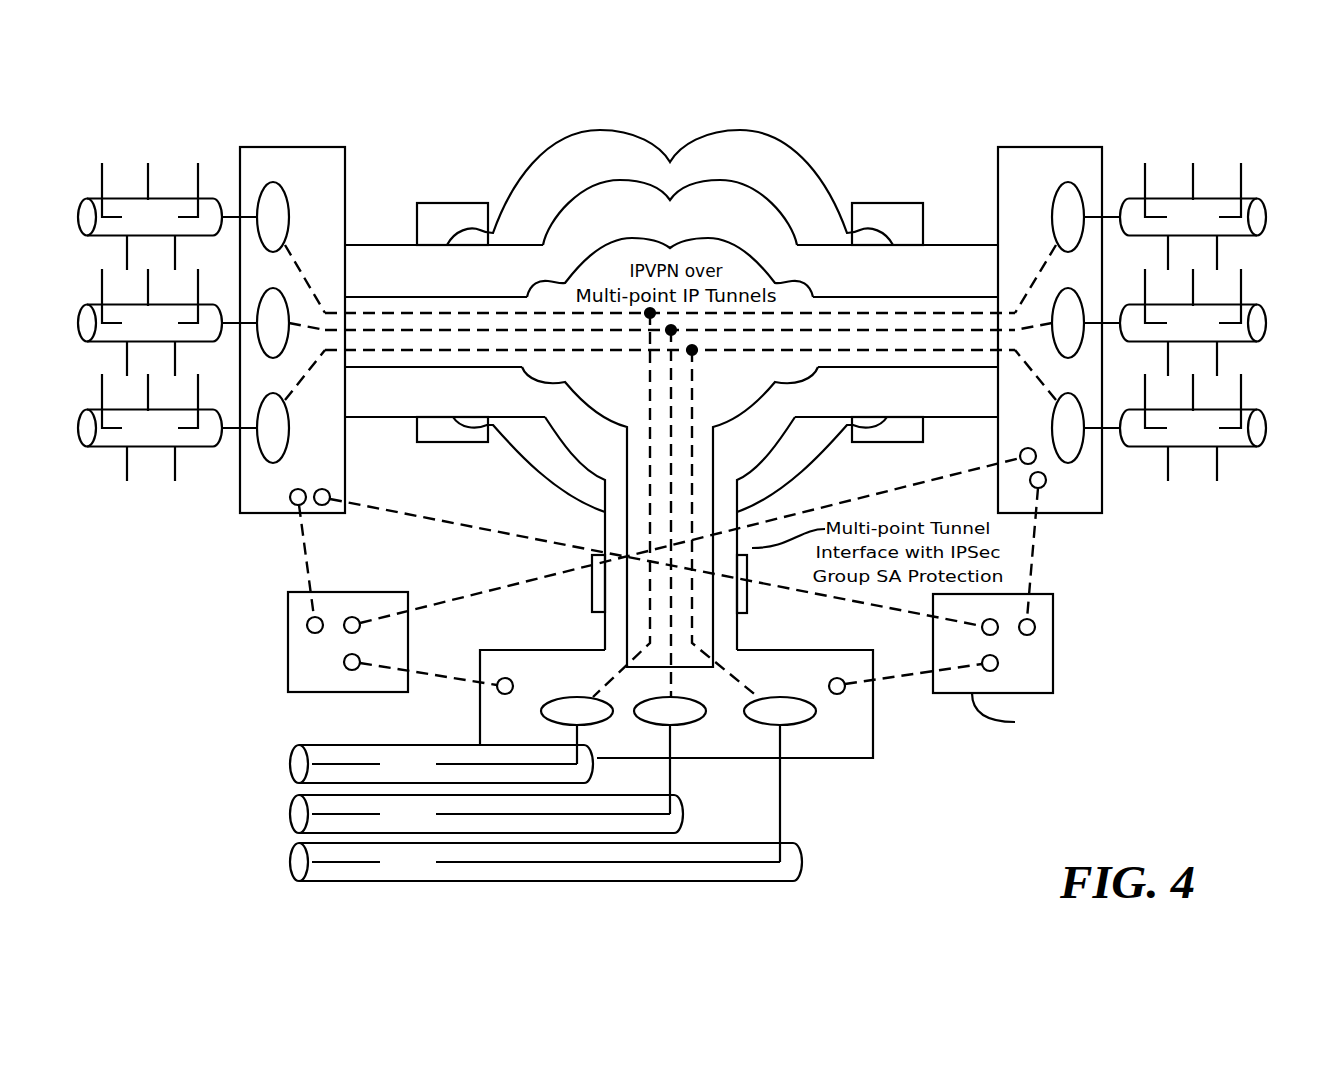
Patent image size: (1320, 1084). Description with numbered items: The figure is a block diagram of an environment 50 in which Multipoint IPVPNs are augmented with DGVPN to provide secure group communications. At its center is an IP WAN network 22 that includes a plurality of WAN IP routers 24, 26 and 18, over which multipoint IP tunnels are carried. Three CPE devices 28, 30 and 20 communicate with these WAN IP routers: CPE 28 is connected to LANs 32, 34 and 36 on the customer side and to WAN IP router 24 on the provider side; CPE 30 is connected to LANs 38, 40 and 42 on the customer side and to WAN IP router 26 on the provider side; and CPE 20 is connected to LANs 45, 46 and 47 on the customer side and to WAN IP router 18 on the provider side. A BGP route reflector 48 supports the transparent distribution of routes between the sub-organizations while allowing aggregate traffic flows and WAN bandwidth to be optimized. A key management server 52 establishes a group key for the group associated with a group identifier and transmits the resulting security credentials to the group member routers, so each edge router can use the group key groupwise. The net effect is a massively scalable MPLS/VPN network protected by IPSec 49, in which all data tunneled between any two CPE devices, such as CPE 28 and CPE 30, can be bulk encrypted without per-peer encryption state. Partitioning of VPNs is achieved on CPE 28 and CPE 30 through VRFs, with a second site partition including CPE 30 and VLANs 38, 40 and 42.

The environment 50 is at (174, 116).
The IP WAN network 22 is at (672, 160).
The IPSec 49 is at (748, 220).
The WAN IP router 24 is at (470, 203).
The WAN IP router 26 is at (915, 203).
The WAN IP router 18 is at (592, 612).
The CPE device 28 is at (318, 147).
The CPE device 30 is at (1090, 150).
The CPE device 20 is at (480, 733).
The LAN 32 is at (88, 198).
The LAN 34 is at (88, 304).
The LAN 36 is at (88, 409).
The LAN 38 is at (1250, 200).
The LAN 40 is at (1250, 306).
The LAN 42 is at (1250, 411).
The LAN 45 is at (290, 764).
The LAN 46 is at (290, 814).
The LAN 47 is at (290, 862).
The BGP Route Reflector 48 is at (1053, 610).
The key management server 52 is at (357, 592).